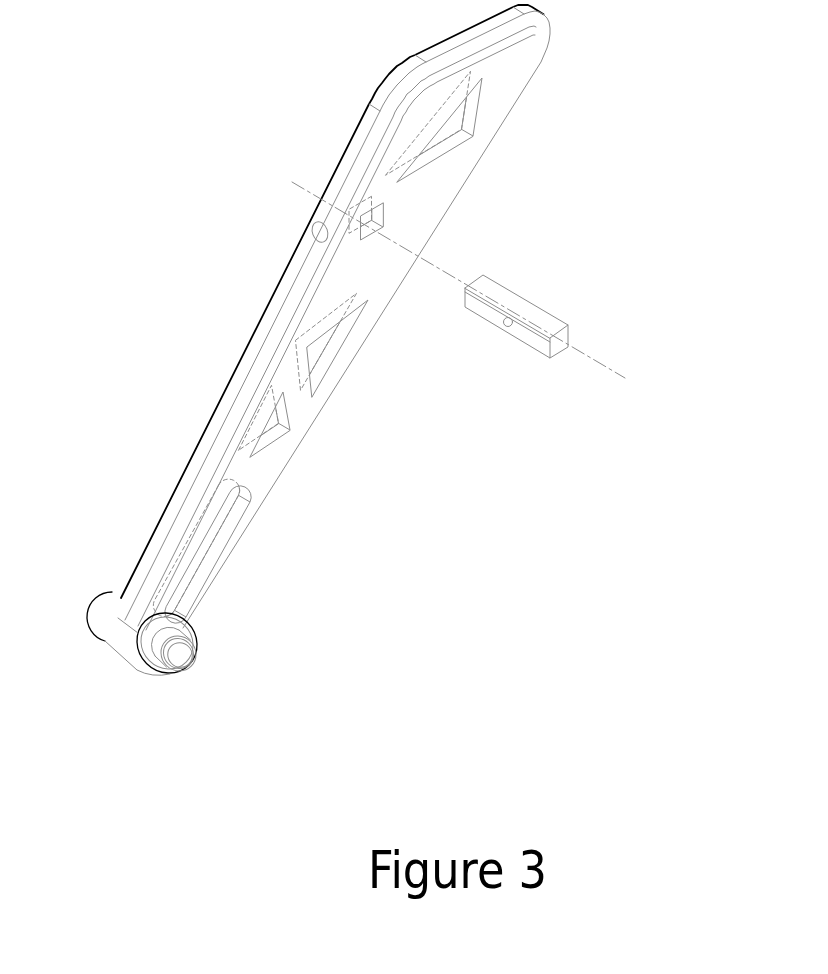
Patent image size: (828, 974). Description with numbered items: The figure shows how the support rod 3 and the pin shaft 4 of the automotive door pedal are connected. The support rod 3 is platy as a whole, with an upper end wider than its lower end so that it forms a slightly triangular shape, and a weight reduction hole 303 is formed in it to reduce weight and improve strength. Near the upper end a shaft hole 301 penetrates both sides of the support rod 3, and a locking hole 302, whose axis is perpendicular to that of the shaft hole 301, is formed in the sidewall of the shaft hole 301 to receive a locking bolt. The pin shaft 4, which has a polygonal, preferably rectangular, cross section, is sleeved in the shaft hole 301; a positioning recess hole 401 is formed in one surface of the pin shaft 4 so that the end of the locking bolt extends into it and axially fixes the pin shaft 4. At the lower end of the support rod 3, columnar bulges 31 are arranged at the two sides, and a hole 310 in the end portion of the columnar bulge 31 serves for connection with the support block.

The support rod 3 is at (248, 377).
The shaft hole 301 is at (363, 220).
The locking hole 302 is at (316, 228).
The weight reduction hole 303 is at (202, 507).
The columnar bulge 31 is at (162, 657).
The hole 310 is at (180, 657).
The pin shaft 4 is at (550, 323).
The positioning recess hole 401 is at (513, 319).